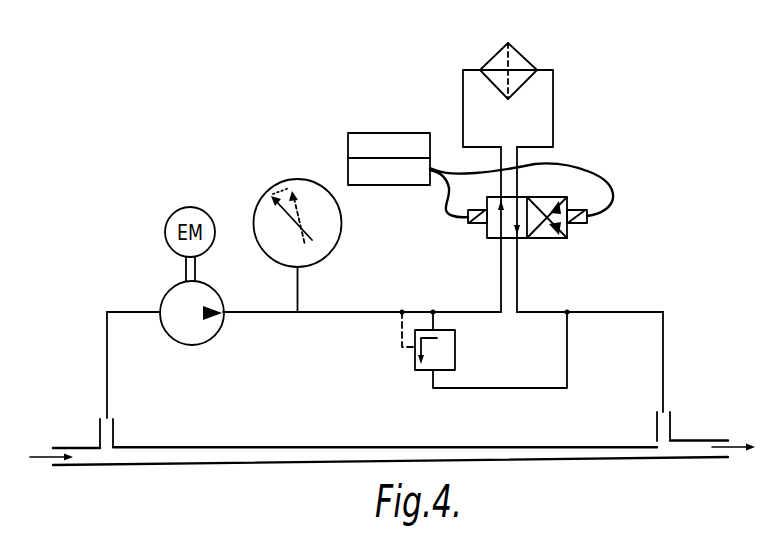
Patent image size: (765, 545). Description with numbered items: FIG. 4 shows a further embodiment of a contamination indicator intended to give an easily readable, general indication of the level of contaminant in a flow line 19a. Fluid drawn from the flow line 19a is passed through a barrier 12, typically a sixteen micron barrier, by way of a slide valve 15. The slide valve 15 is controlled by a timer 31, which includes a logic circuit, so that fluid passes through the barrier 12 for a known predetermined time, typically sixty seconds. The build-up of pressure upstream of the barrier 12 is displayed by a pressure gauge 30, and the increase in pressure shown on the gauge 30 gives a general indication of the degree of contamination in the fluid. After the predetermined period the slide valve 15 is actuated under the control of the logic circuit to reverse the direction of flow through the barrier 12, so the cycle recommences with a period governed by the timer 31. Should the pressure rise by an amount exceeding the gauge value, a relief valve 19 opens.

The barrier 12 is at (537, 63).
The slide valve 15 is at (548, 238).
The relief valve 19 is at (415, 361).
The flow line 19a is at (281, 450).
The pressure gauge 30 is at (266, 195).
The timer 31 is at (355, 133).